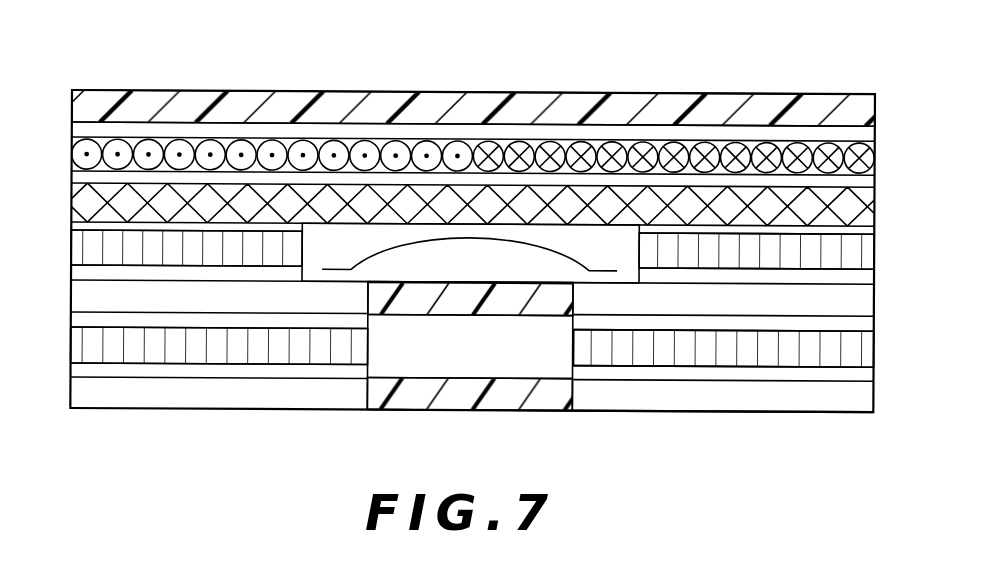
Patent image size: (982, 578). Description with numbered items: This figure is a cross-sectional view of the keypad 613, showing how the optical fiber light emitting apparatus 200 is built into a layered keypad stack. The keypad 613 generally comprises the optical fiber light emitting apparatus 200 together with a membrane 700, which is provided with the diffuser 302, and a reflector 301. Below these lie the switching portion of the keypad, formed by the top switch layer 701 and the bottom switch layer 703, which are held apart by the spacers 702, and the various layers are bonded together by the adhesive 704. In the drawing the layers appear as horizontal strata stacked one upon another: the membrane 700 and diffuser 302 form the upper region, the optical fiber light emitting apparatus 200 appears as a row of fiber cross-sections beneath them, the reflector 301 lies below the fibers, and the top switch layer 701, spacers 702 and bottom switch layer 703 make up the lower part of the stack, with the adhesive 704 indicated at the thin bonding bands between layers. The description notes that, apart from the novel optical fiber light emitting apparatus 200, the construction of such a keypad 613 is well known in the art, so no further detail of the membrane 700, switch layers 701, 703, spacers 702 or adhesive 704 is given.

The optical fiber light emitting apparatus 200 is at (523, 148).
The reflector 301 is at (108, 195).
The diffuser 302 is at (708, 123).
The keypad 613 is at (487, 471).
The membrane 700 is at (625, 102).
The top switch layer 701 is at (818, 302).
The spacers 702 is at (690, 253).
The bottom switch layer 703 is at (718, 393).
The adhesive 704 is at (170, 130).